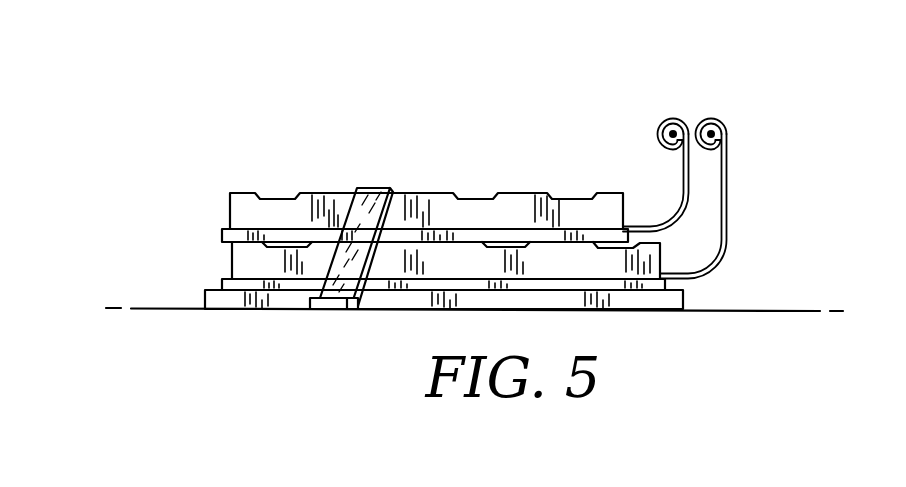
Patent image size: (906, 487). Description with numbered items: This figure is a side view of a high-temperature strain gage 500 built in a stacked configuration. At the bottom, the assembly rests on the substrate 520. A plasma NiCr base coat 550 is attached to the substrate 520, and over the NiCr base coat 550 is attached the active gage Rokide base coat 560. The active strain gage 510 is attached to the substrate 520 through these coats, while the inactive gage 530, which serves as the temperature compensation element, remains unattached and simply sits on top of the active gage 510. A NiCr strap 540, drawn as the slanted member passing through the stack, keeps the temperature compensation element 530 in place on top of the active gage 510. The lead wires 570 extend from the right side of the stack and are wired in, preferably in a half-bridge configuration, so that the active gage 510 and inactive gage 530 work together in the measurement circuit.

The high-temperature strain gage 500 is at (195, 200).
The active strain gage 510 is at (245, 254).
The substrate 520 is at (772, 310).
The inactive gage 530 is at (523, 208).
The NiCr strap 540 is at (380, 197).
The plasma NiCr base coat 550 is at (227, 302).
The active gage Rokide base coat 560 is at (290, 288).
The lead wires 570 is at (692, 122).